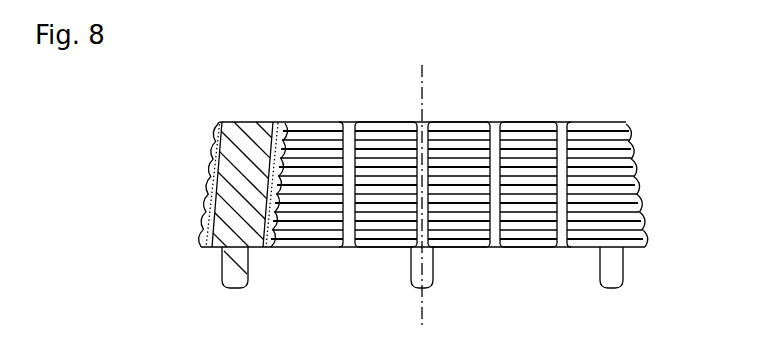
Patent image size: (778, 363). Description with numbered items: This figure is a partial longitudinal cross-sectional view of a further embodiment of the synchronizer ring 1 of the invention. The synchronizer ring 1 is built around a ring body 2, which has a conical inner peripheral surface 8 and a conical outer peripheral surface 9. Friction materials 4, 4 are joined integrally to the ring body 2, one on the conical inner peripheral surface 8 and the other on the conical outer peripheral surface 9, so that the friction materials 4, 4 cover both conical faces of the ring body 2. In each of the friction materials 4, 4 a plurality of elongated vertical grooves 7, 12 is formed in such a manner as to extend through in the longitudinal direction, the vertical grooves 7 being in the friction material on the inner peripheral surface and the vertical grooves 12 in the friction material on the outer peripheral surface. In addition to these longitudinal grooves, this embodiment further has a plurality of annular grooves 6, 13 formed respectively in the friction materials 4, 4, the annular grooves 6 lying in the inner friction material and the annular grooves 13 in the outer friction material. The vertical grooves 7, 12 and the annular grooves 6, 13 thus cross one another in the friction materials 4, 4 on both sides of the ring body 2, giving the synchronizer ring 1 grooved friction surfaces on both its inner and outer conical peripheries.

The synchronizer ring 1 is at (537, 107).
The ring body 2 is at (223, 236).
The friction material 4 is at (209, 166).
The annular groove 6 is at (378, 138).
The vertical groove 7 is at (349, 249).
The conical inner peripheral surface 8 is at (269, 231).
The conical outer peripheral surface 9 is at (207, 205).
The vertical groove 12 is at (563, 249).
The annular groove 13 is at (213, 136).